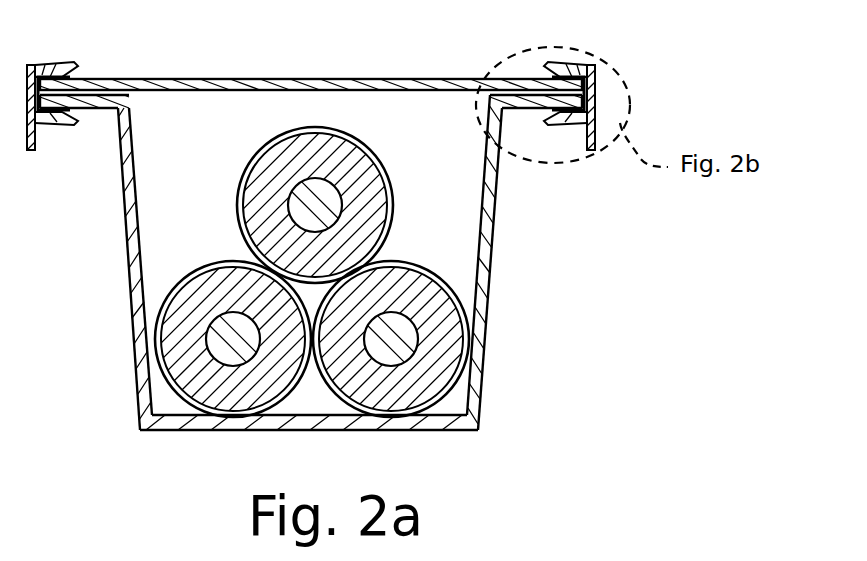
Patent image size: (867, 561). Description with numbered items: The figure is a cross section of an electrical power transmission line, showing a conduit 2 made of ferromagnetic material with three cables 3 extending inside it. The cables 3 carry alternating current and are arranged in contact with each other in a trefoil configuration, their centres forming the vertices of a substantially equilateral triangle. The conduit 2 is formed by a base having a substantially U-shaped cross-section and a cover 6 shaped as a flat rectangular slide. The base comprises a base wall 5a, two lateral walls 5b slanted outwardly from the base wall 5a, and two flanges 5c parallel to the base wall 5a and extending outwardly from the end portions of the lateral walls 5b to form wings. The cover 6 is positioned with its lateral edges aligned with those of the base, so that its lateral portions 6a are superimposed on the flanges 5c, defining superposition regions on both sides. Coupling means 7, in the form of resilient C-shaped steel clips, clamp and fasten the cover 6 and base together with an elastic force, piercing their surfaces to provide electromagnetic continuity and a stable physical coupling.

The conduit 2 is at (646, 249).
The cables 3 is at (275, 180).
The base wall 5a is at (415, 431).
The lateral walls 5b is at (128, 243).
The flanges 5c is at (104, 110).
The cover 6 is at (312, 79).
The lateral portions 6a is at (108, 79).
The coupling means 7 is at (42, 66).